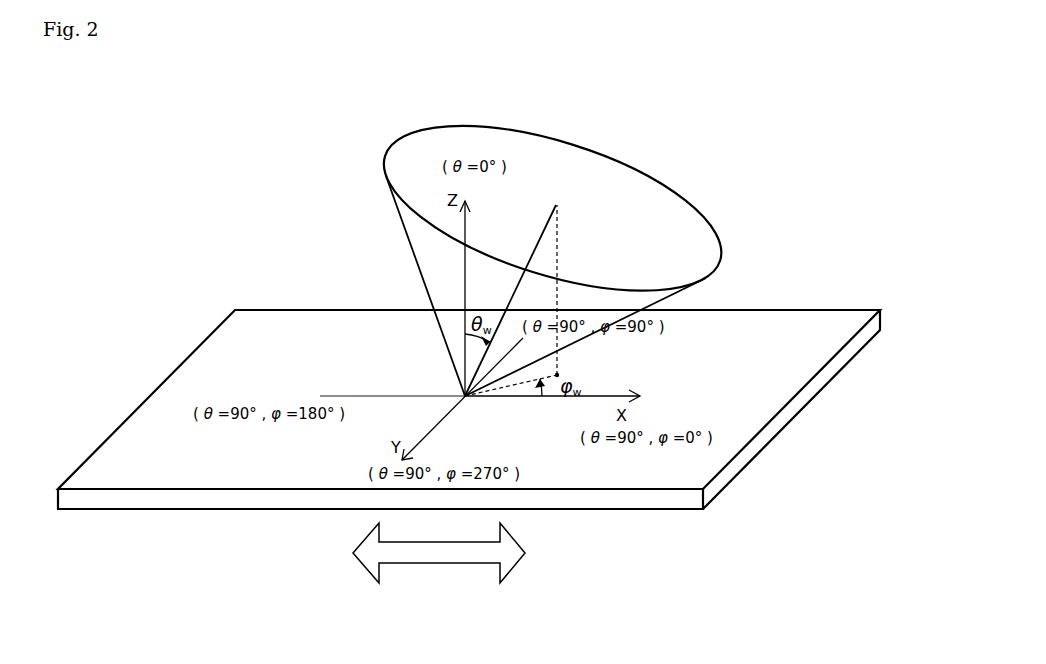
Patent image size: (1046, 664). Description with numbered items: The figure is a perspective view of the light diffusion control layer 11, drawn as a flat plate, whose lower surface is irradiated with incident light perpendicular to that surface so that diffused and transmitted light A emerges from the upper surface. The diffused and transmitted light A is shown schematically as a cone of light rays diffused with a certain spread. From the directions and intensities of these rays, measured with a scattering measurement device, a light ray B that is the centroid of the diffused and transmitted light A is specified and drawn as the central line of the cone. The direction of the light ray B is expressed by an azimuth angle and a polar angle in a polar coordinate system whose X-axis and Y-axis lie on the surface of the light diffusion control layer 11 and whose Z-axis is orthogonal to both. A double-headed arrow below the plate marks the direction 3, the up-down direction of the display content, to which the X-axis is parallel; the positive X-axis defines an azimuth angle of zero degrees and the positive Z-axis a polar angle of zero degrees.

The light diffusion control layer 11 is at (273, 328).
The diffused and transmitted light A is at (588, 150).
The light ray that is the centroid of the diffused and transmitted light B is at (553, 223).
The direction 3 is at (440, 553).